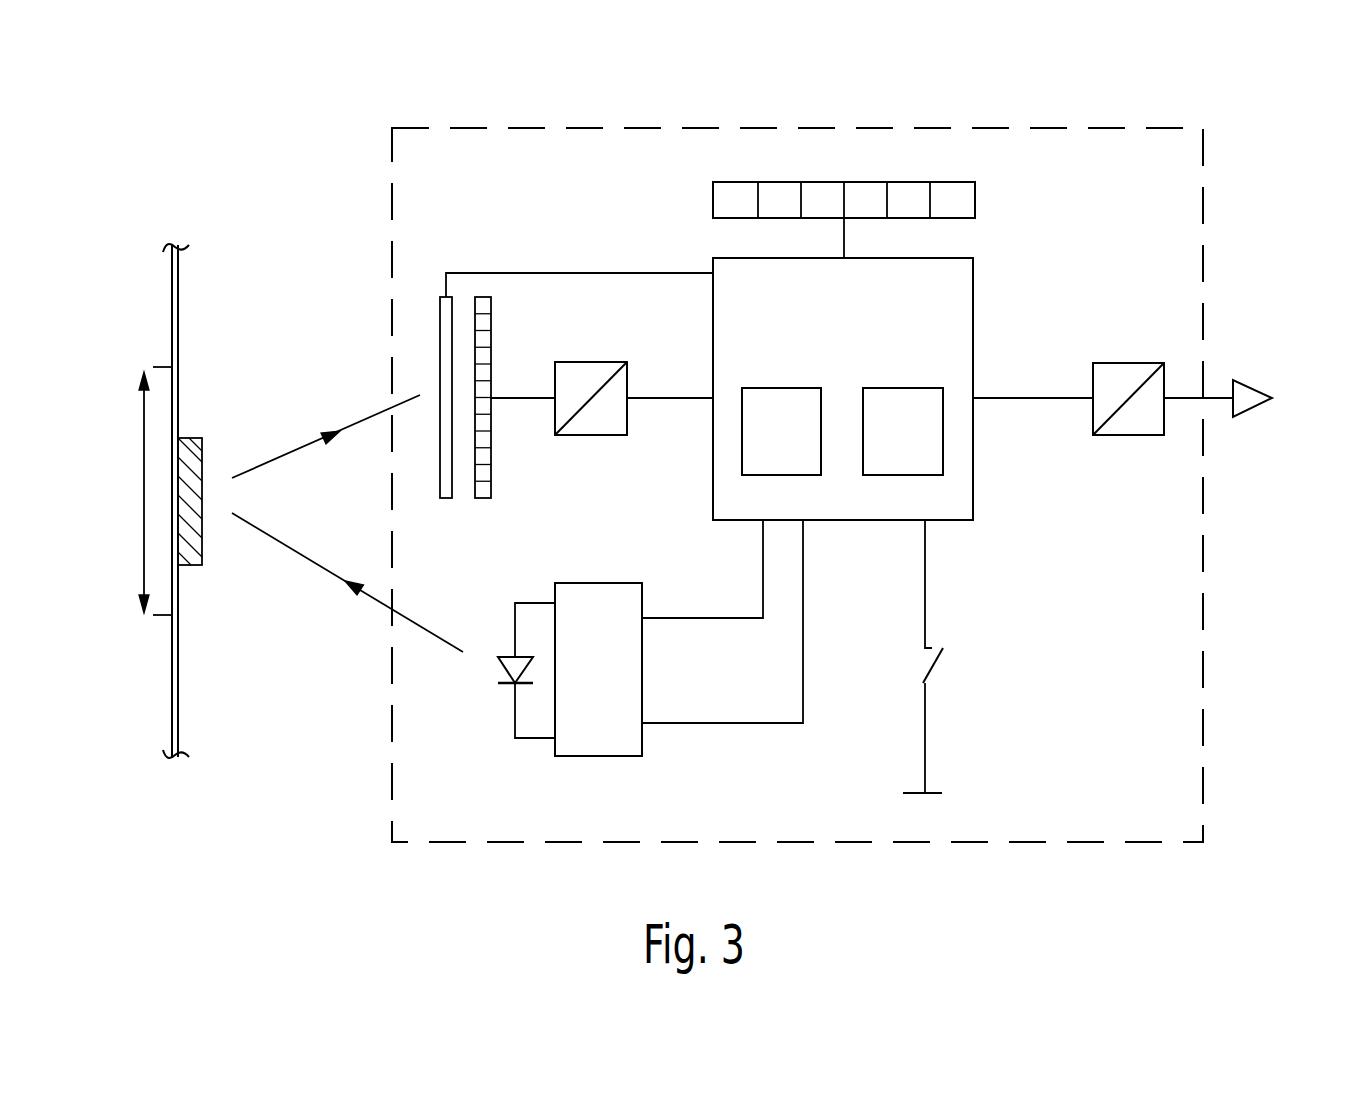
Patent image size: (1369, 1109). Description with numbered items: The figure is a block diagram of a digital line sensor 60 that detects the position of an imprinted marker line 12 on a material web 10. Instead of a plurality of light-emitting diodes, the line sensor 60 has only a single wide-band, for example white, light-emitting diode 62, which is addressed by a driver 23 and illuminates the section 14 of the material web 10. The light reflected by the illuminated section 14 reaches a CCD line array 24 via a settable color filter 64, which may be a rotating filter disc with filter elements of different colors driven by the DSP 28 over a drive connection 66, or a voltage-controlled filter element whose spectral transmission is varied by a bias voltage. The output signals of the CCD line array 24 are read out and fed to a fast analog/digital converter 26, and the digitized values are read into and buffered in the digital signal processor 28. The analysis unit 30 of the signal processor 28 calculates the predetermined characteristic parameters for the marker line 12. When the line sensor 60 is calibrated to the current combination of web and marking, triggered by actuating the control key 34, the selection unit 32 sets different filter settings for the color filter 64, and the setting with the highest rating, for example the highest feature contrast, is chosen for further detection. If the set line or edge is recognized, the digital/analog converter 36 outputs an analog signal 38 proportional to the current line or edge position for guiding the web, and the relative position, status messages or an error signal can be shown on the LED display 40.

The material web 10 is at (179, 278).
The marker line 12 is at (193, 438).
The illuminated section 14 is at (143, 440).
The driver 23 is at (642, 747).
The CCD line array 24 is at (491, 327).
The analog/digital converter 26 is at (588, 435).
The digital signal processor 28 is at (973, 315).
The analysis unit 30 is at (780, 388).
The selection unit 32 is at (903, 388).
The control key 34 is at (938, 665).
The digital/analog converter 36 is at (1128, 363).
The analog signal 38 is at (1262, 388).
The LED display 40 is at (975, 200).
The digital line sensor 60 is at (1205, 598).
The light-emitting diode 62 is at (500, 672).
The settable color filter 64 is at (446, 498).
The filter drive connection 66 is at (583, 272).